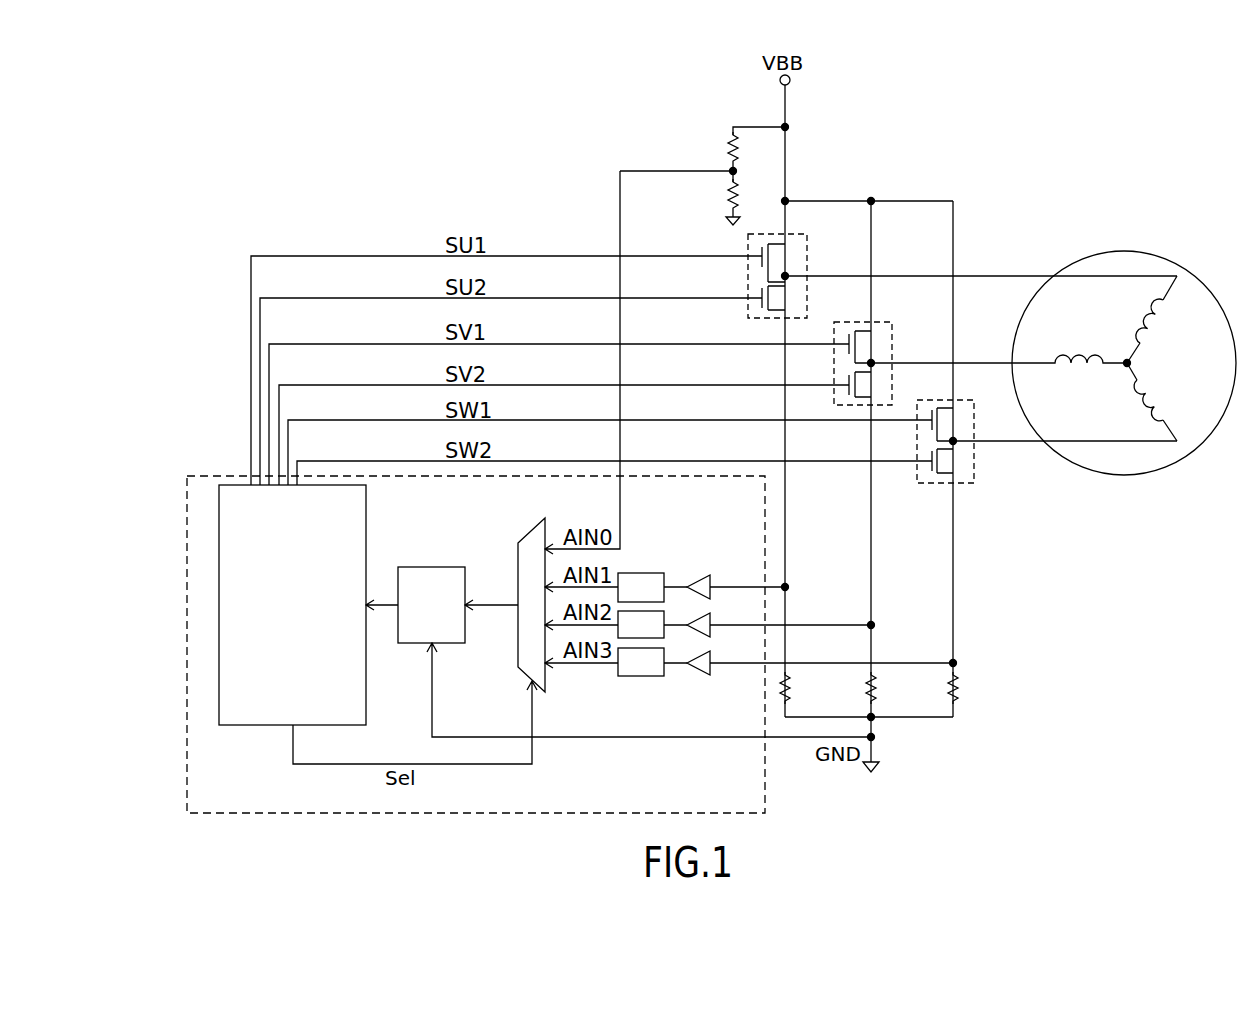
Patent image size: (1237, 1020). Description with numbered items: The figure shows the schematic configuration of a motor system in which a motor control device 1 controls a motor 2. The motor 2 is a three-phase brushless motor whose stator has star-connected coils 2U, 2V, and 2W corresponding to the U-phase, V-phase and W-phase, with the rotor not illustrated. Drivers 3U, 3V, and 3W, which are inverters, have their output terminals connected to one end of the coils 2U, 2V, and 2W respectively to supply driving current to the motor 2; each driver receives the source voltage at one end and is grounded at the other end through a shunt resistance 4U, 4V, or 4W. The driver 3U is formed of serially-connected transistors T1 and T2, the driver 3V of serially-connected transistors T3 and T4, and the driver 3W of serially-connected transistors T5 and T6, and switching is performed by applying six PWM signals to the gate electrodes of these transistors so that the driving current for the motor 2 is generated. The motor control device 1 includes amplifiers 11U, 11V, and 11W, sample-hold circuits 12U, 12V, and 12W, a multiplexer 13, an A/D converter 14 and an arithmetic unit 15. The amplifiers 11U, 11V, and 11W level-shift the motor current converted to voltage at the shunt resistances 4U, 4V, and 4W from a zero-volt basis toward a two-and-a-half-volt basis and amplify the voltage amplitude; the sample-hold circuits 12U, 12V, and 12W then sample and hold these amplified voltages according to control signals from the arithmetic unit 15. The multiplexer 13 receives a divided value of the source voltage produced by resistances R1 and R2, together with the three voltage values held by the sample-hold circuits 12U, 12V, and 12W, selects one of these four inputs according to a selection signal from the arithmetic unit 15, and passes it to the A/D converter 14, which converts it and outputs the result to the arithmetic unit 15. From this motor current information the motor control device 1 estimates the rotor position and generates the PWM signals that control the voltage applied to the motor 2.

The motor control device 1 is at (765, 795).
The motor 2 is at (1123, 343).
The coil 2U is at (1162, 319).
The coil 2V is at (1068, 340).
The coil 2W is at (1133, 402).
The driver 3U is at (780, 272).
The driver 3V is at (886, 346).
The driver 3W is at (968, 471).
The shunt resistance 4U is at (802, 688).
The shunt resistance 4V is at (888, 688).
The shunt resistance 4W is at (973, 688).
The amplifier 11U is at (713, 578).
The amplifier 11V is at (710, 634).
The amplifier 11W is at (702, 675).
The sample-hold circuit 12U is at (655, 573).
The sample-hold circuit 12V is at (663, 635).
The sample-hold circuit 12W is at (628, 677).
The multiplexer 13 is at (516, 650).
The A/D converter 14 is at (411, 645).
The arithmetic unit 15 is at (242, 725).
The transistor T1 is at (762, 263).
The transistor T2 is at (762, 305).
The transistor T3 is at (870, 343).
The transistor T4 is at (870, 386).
The transistor T5 is at (953, 421).
The transistor T6 is at (953, 462).
The resistance R1 is at (751, 148).
The resistance R2 is at (751, 194).